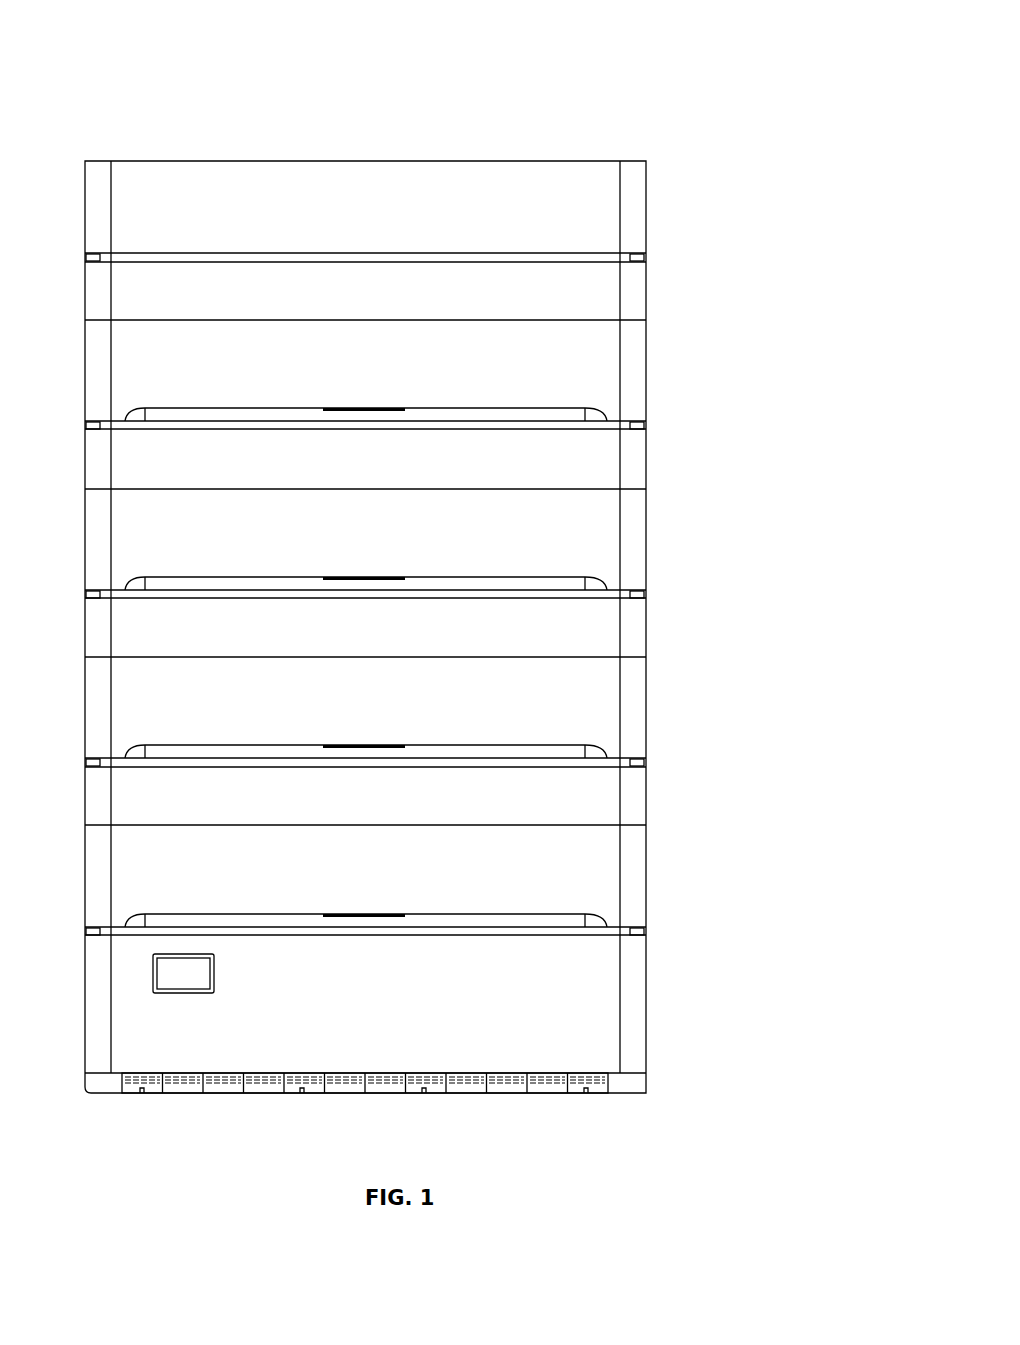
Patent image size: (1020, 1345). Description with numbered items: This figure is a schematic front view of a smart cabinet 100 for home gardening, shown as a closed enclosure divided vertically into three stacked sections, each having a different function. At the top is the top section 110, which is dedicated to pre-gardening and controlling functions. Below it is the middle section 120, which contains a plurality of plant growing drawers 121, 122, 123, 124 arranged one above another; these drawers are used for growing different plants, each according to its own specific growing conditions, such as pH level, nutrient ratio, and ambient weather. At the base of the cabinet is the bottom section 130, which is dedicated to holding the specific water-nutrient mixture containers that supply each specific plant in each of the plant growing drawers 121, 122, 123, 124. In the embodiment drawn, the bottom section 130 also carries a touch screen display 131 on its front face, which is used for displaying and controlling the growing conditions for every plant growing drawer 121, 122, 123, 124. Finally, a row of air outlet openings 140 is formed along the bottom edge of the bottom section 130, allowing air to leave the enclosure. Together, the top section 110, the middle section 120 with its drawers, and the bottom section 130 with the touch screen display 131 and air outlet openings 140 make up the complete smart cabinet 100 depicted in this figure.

The smart cabinet 100 is at (662, 103).
The top section 110 is at (646, 213).
The middle section 120 is at (436, 630).
The plant growing drawer 121 is at (217, 364).
The plant growing drawer 122 is at (221, 528).
The plant growing drawer 123 is at (217, 696).
The plant growing drawer 124 is at (205, 864).
The bottom section 130 is at (430, 1062).
The touch screen display 131 is at (214, 975).
The air outlet openings 140 is at (500, 1095).